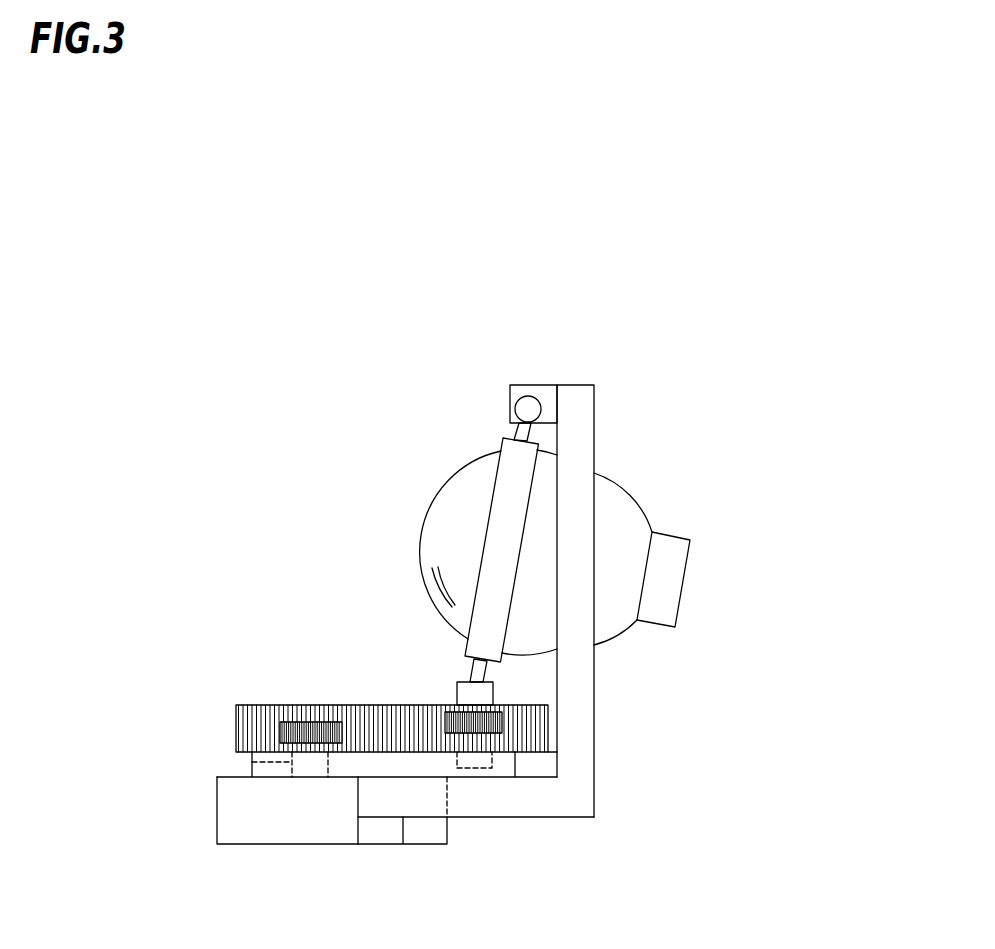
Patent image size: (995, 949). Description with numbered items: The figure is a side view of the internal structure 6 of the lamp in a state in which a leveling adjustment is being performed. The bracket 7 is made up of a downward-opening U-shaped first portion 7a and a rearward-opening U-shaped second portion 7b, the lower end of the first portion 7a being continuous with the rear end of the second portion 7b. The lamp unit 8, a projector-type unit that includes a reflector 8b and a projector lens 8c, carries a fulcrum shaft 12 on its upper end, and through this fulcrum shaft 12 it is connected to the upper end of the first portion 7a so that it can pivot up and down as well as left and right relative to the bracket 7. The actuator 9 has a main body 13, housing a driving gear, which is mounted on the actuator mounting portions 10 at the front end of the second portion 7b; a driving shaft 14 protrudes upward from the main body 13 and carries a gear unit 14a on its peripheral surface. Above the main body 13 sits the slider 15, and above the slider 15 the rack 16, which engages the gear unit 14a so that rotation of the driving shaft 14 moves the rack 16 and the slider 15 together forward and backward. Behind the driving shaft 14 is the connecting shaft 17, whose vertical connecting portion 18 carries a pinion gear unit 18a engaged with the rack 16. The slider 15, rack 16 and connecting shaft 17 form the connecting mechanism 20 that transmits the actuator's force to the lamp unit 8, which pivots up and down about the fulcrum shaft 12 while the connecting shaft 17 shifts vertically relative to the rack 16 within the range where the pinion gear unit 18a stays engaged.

The internal structure 6 is at (212, 460).
The bracket 7 is at (596, 427).
The first portion 7a is at (590, 458).
The second portion 7b is at (477, 808).
The lamp unit 8 is at (502, 439).
The reflector 8b is at (631, 512).
The projector lens 8c is at (437, 520).
The actuator 9 is at (495, 760).
The actuator mounting portion 10 is at (388, 838).
The fulcrum shaft 12 is at (507, 432).
The main body 13 is at (293, 838).
The driving shaft 14 is at (252, 756).
The gear unit 14a is at (236, 733).
The slider 15 is at (382, 757).
The rack 16 is at (259, 705).
The connecting shaft 17 is at (457, 683).
The connecting portion 18 is at (487, 693).
The pinion gear unit 18a is at (500, 727).
The connecting mechanism 20 is at (358, 627).